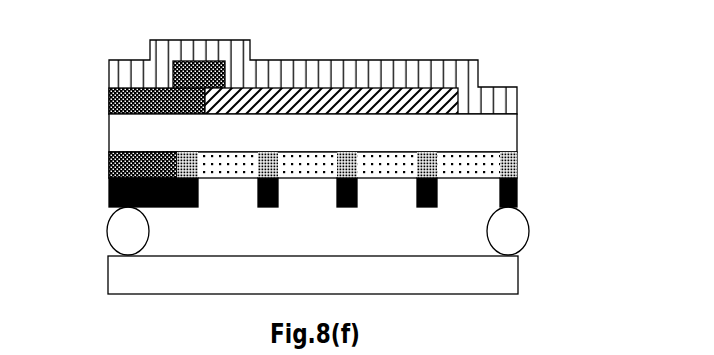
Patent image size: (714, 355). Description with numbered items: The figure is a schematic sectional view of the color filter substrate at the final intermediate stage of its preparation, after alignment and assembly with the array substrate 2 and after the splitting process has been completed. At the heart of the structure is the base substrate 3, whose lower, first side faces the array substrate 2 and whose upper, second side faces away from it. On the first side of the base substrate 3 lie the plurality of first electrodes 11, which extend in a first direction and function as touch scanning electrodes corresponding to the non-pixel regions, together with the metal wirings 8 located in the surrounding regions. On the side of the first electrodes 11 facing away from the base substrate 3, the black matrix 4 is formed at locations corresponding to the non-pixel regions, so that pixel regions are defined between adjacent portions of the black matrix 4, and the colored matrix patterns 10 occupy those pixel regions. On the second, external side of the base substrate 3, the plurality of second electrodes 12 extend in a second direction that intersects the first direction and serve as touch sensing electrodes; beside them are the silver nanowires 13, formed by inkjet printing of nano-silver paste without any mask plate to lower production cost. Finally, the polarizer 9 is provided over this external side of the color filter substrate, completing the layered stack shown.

The array substrate 2 is at (538, 276).
The base substrate 3 is at (115, 127).
The black matrix 4 is at (110, 199).
The metal wirings 8 is at (110, 168).
The polarizer 9 is at (115, 73).
The colored matrix patterns 10 is at (475, 168).
The first electrodes 11 is at (197, 163).
The second electrodes 12 is at (435, 97).
The silver nanowires 13 is at (115, 101).